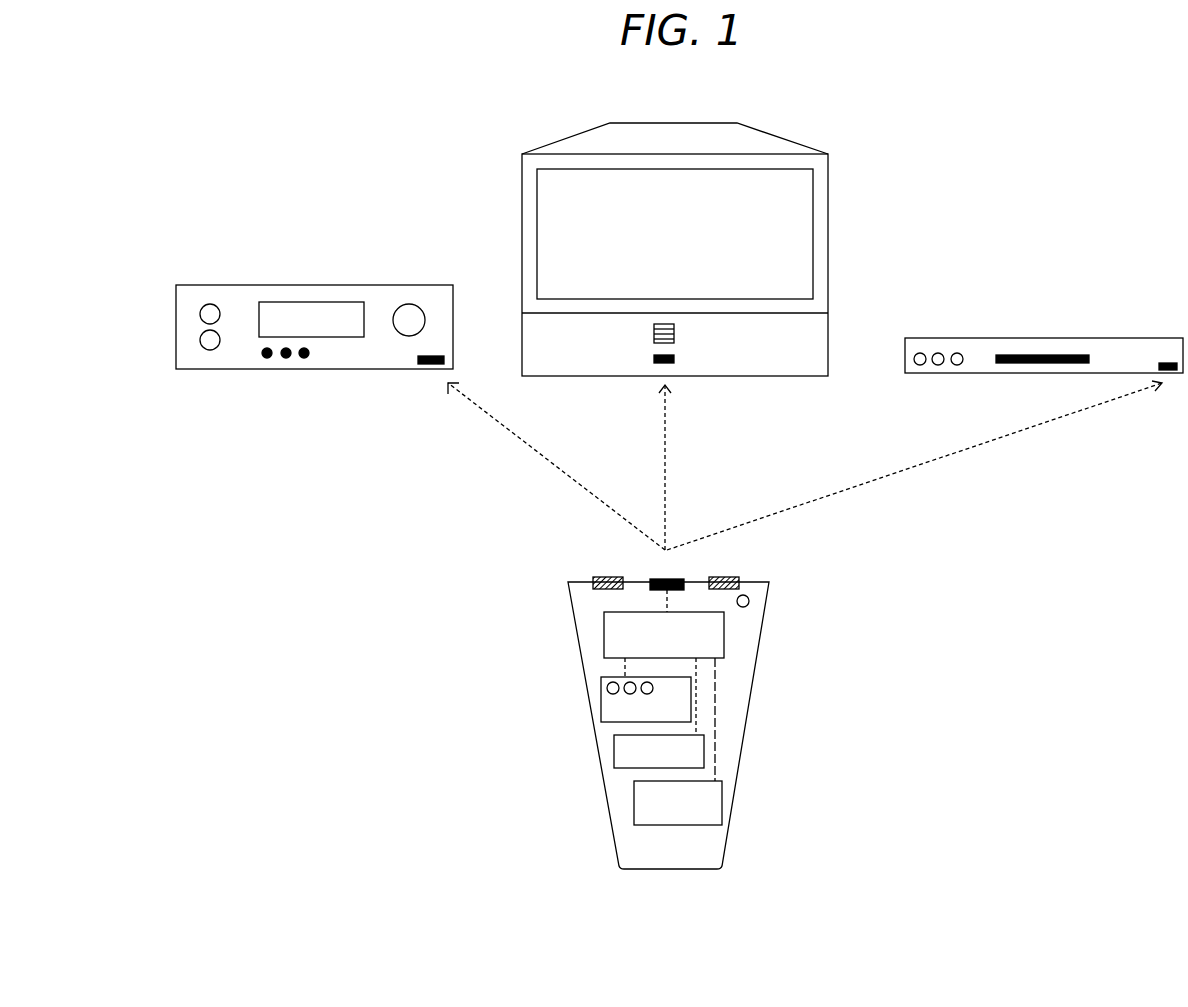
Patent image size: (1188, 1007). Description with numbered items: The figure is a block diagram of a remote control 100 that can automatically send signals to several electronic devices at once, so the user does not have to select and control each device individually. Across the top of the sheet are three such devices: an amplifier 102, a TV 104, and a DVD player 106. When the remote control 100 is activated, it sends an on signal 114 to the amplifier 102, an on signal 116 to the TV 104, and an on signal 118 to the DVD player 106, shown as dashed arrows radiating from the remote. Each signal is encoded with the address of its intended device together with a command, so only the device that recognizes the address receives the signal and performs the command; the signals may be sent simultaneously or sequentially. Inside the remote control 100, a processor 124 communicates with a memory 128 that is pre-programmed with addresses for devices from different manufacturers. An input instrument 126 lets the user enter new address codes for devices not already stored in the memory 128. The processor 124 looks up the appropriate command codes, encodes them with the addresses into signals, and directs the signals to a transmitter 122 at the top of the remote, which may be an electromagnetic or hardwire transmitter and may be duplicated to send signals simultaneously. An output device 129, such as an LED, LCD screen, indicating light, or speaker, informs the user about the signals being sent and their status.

The remote control 100 is at (546, 683).
The amplifier 102 is at (193, 285).
The TV 104 is at (623, 138).
The DVD player 106 is at (923, 338).
The signal 114 is at (556, 466).
The signal 116 is at (684, 467).
The signal 118 is at (914, 465).
The transmitter 122 is at (722, 577).
The processor 124 is at (664, 696).
The input instrument 126 is at (746, 595).
The memory 128 is at (659, 751).
The output device 129 is at (678, 802).